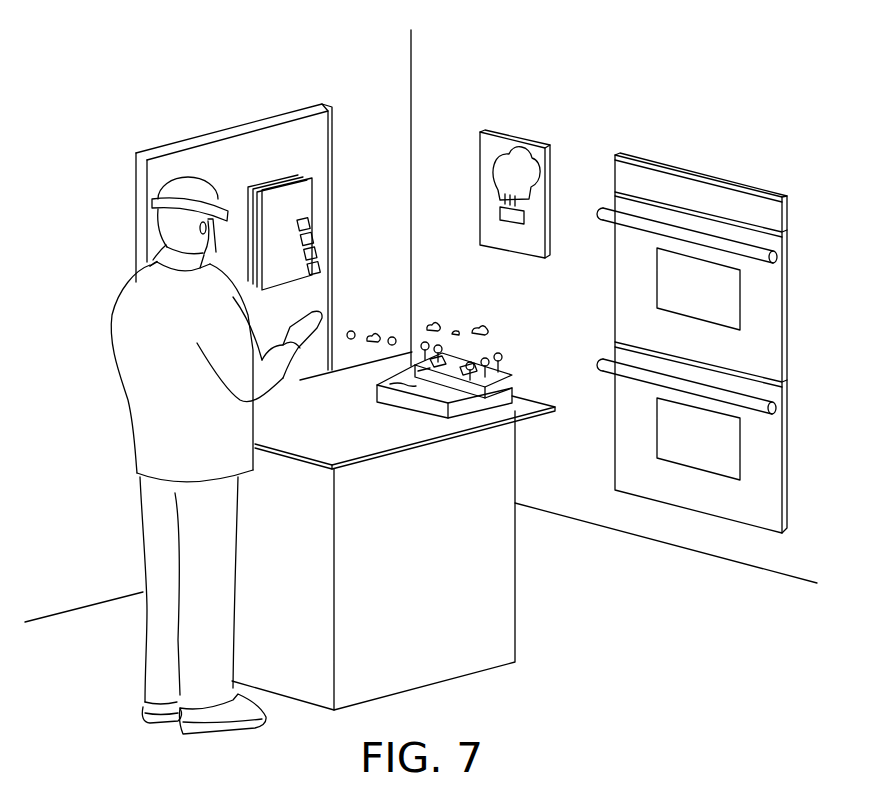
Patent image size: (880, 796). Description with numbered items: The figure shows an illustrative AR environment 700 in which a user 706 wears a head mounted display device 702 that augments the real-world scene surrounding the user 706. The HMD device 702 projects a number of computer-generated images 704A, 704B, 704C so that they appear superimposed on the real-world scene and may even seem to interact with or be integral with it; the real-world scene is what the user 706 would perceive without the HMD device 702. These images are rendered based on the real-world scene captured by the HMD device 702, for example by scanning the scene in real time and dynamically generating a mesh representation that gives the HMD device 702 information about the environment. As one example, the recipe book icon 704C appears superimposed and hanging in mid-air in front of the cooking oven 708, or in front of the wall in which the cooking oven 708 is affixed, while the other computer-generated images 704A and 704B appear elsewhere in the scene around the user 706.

The AR environment 700 is at (197, 79).
The head mounted display device 702 is at (157, 193).
The computer-generated image 704A is at (318, 214).
The computer-generated image 704B is at (497, 335).
The recipe book icon 704C is at (491, 126).
The user 706 is at (131, 284).
The cooking oven 708 is at (772, 185).